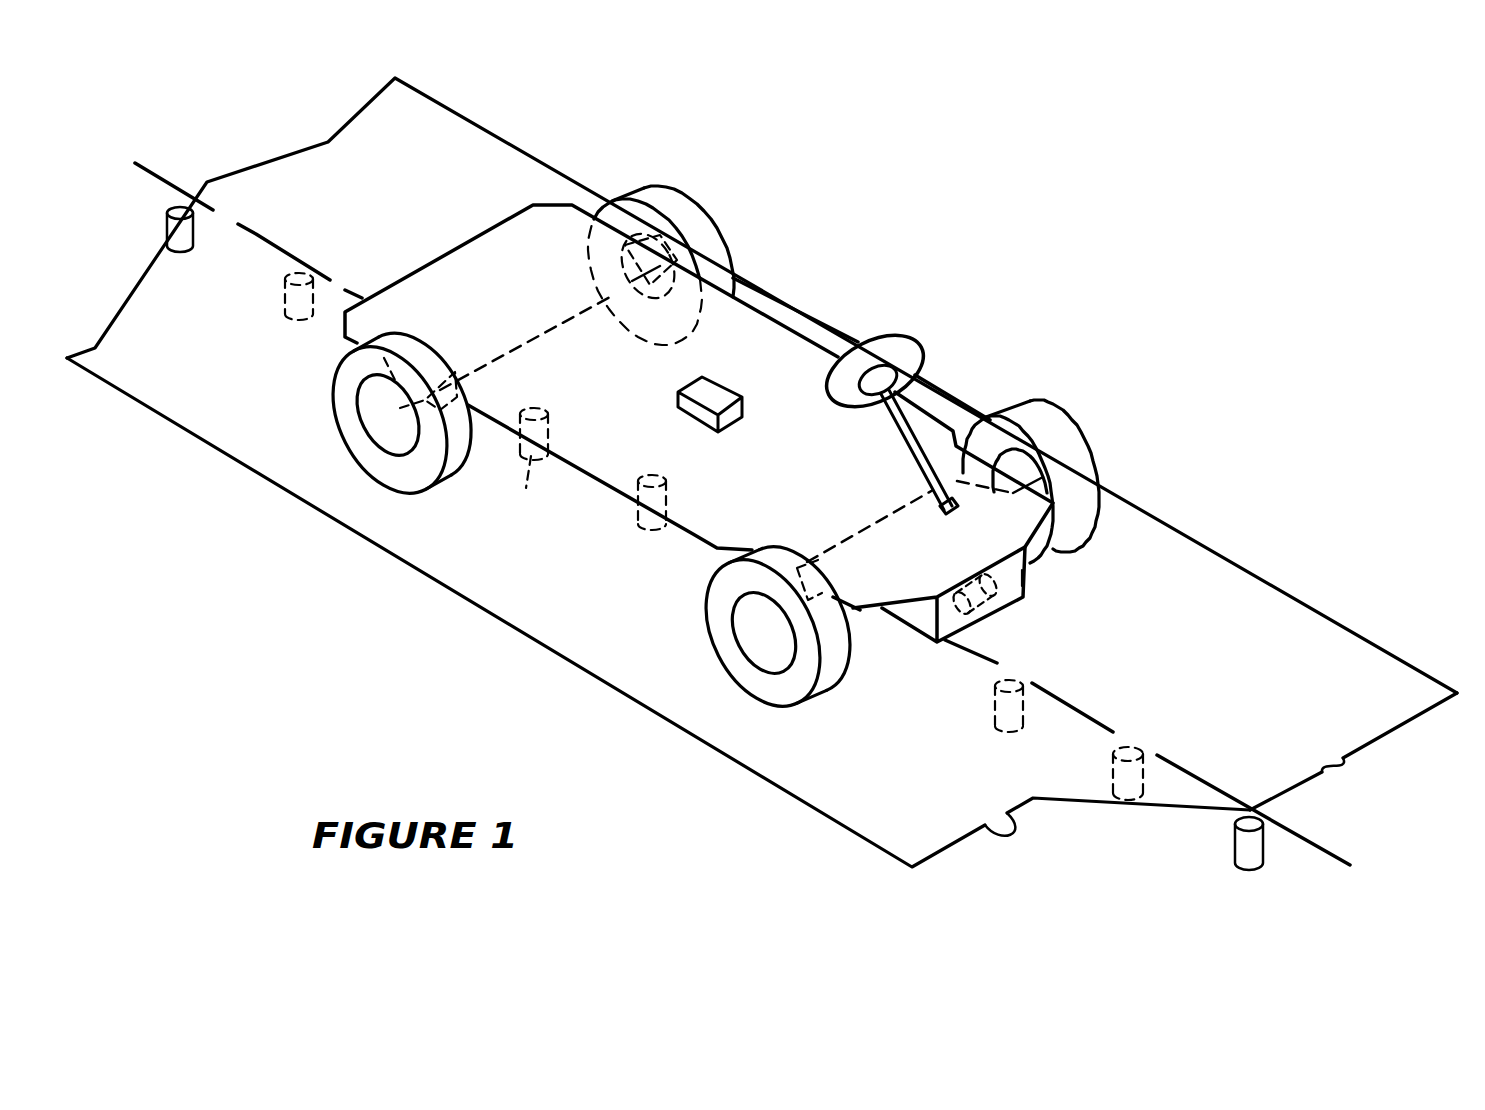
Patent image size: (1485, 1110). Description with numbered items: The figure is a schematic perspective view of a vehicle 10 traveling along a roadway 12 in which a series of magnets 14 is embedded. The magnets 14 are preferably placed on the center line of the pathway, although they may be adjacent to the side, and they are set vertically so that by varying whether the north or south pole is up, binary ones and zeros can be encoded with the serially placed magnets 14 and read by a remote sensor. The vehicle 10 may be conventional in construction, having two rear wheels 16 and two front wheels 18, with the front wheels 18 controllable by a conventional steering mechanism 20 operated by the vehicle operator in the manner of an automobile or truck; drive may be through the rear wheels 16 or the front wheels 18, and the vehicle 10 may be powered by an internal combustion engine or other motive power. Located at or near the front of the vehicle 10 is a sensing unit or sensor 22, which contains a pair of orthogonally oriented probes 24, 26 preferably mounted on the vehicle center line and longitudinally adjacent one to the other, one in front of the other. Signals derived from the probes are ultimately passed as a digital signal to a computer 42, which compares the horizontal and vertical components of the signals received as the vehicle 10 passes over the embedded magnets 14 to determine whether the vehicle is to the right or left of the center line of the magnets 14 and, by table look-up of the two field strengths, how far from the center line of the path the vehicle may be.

The vehicle 10 is at (880, 215).
The roadway 12 is at (937, 806).
The magnets 14 is at (167, 222).
The rear wheels 16 is at (338, 398).
The front wheels 18 is at (712, 622).
The steering mechanism 20 is at (940, 433).
The sensor 22 is at (925, 620).
The probe 24 is at (983, 622).
The probe 26 is at (1022, 578).
The computer 42 is at (717, 393).